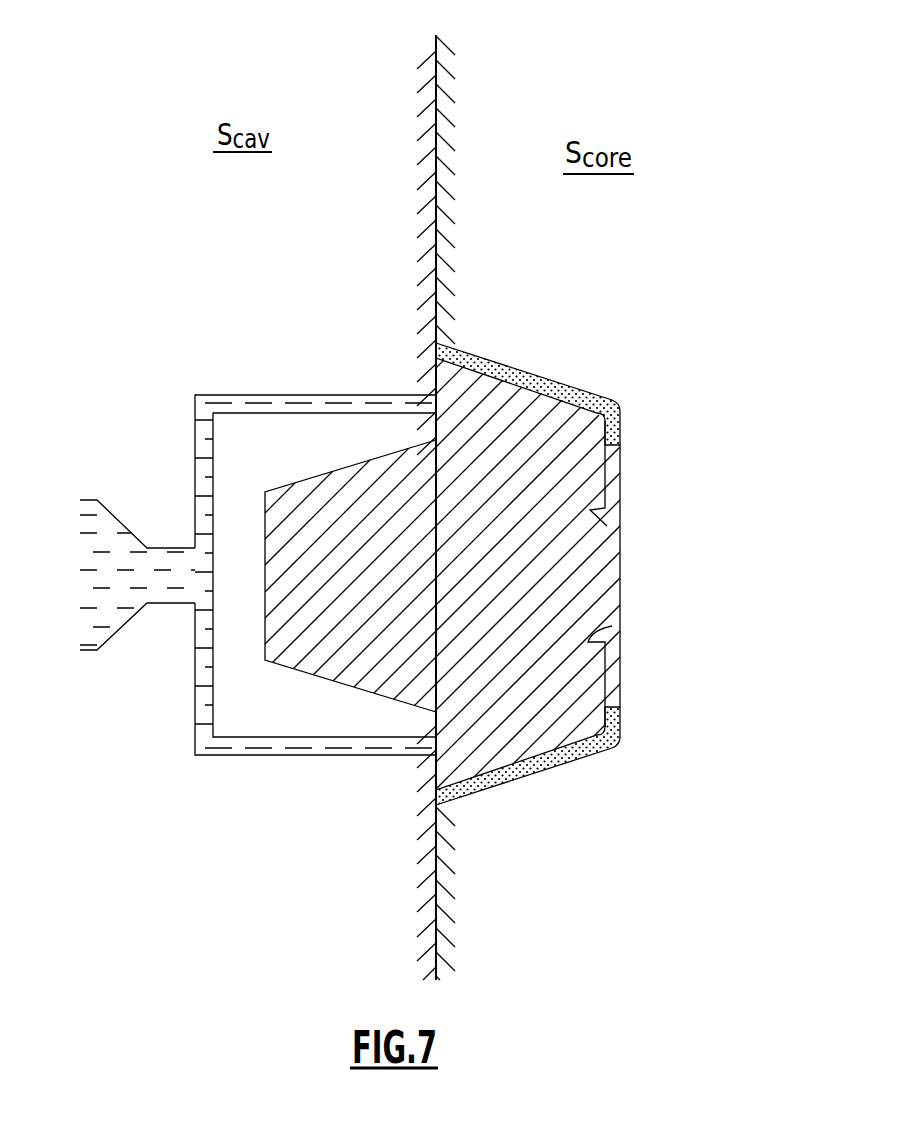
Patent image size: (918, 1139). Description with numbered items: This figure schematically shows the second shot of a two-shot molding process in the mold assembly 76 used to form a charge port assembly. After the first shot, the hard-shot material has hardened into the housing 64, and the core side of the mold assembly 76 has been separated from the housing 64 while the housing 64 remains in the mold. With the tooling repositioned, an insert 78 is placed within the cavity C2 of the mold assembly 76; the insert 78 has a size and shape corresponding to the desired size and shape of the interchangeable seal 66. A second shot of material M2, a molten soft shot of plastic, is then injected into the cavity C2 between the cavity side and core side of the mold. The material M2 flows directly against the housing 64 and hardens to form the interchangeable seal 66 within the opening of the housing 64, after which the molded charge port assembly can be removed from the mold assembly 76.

The mold assembly 76 is at (501, 90).
The housing 64 is at (503, 360).
The insert 78 is at (558, 440).
The interchangeable seal 66 is at (636, 492).
The cavity C2 is at (412, 732).
The material M2 is at (108, 592).